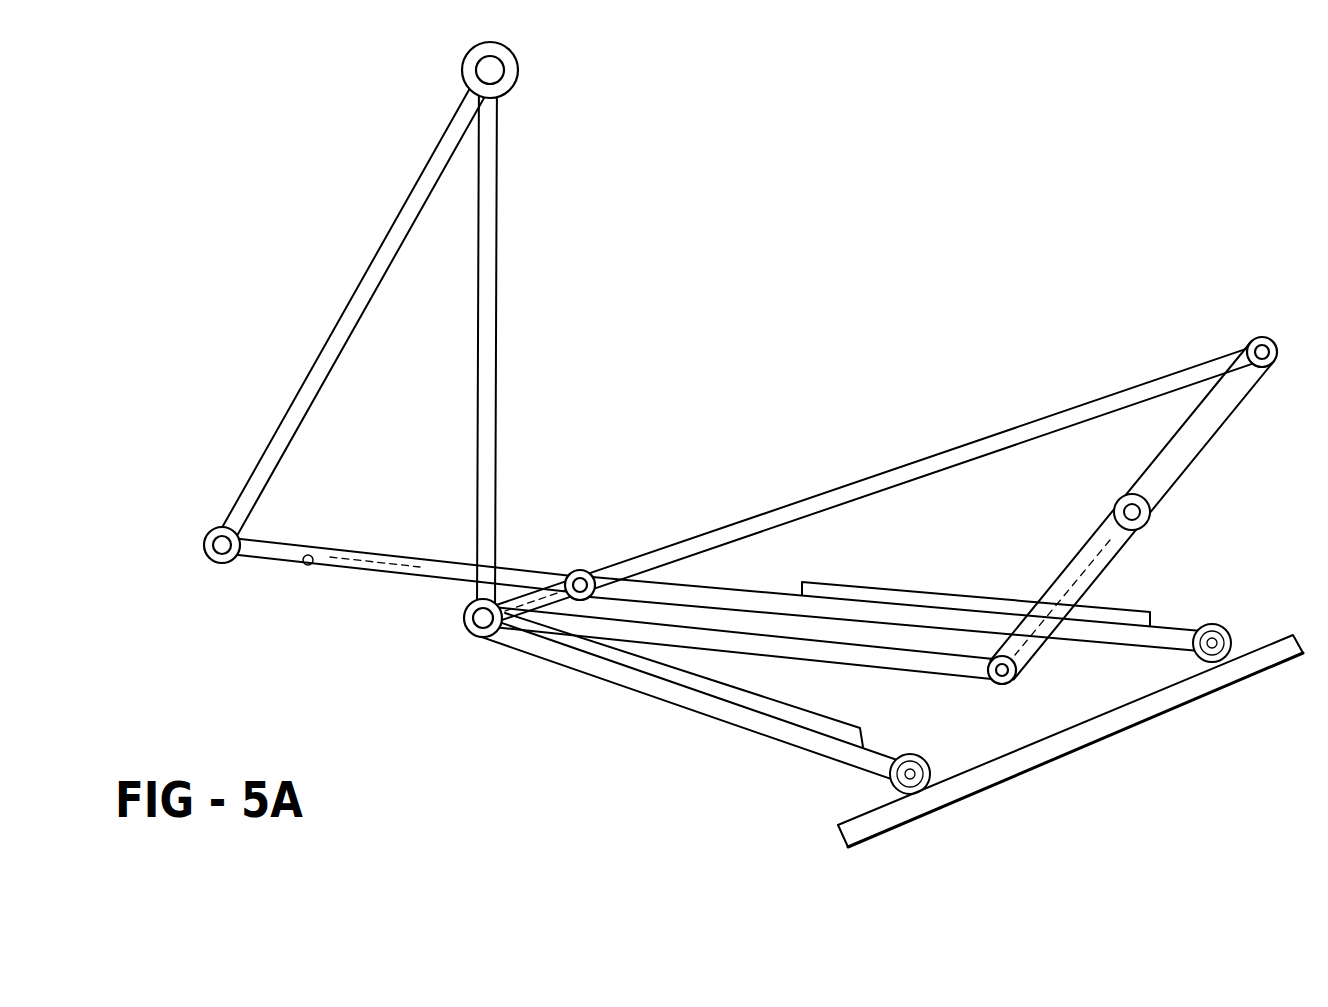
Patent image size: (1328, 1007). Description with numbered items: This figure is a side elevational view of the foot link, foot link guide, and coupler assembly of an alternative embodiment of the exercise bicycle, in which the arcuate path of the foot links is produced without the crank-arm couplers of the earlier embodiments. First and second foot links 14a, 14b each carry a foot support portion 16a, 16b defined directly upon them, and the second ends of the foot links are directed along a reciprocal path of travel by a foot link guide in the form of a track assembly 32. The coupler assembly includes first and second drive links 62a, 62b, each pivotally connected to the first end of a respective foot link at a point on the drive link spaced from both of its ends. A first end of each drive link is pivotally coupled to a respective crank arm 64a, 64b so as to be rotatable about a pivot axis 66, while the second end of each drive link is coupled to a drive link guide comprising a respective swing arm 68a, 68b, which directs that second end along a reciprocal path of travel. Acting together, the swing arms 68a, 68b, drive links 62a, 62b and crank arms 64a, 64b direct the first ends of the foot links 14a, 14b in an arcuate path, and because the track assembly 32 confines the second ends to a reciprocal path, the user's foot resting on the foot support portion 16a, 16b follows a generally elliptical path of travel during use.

The first foot link 14a is at (1142, 637).
The second foot link 14b is at (795, 738).
The foot support portion 16a is at (1149, 600).
The foot support portion 16b is at (682, 672).
The track assembly 32 is at (1082, 738).
The first drive link 62a is at (858, 488).
The second drive link 62b is at (388, 577).
The crank arm 64a is at (1068, 572).
The crank arm 64b is at (1205, 412).
The pivot axis 66 is at (1150, 528).
The swing arm 68a is at (487, 311).
The swing arm 68b is at (340, 327).